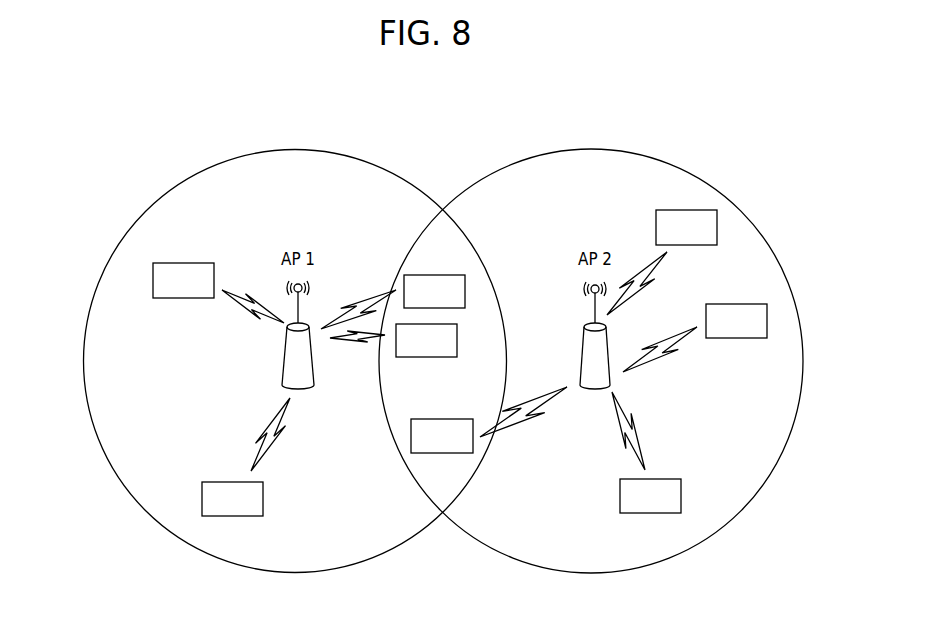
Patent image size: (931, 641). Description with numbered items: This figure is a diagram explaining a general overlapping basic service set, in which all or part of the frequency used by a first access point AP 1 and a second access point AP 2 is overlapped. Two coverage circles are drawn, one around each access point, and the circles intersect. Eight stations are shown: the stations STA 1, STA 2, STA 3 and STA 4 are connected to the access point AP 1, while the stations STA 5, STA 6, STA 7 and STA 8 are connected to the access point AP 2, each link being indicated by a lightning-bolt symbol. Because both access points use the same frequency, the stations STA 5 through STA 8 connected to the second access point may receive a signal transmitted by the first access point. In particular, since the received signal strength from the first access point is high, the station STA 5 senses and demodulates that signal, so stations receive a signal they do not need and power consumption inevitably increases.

The station STA1 1 is at (218, 293).
The station STA2 2 is at (246, 457).
The station STA3 3 is at (393, 302).
The station STA4 4 is at (393, 340).
The station STA5 5 is at (489, 420).
The station STA6 6 is at (646, 452).
The station STA7 7 is at (695, 338).
The station STA8 8 is at (662, 262).